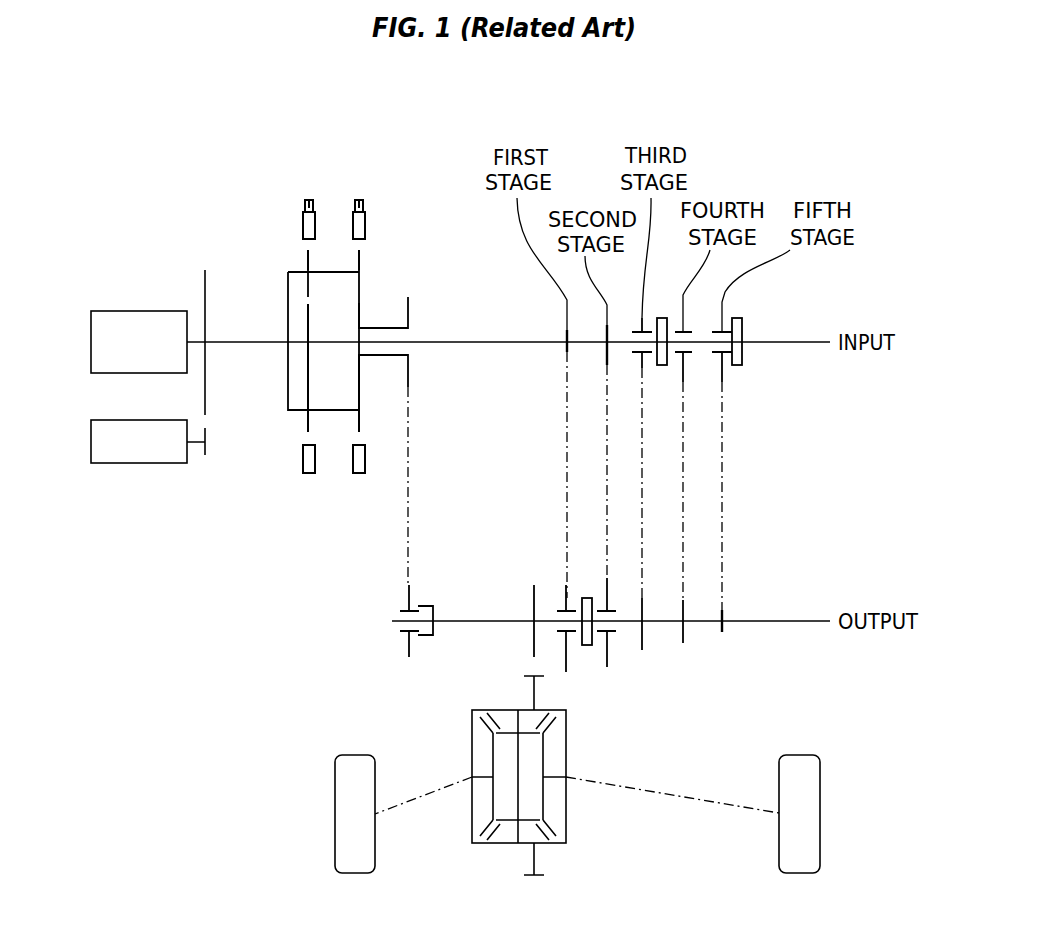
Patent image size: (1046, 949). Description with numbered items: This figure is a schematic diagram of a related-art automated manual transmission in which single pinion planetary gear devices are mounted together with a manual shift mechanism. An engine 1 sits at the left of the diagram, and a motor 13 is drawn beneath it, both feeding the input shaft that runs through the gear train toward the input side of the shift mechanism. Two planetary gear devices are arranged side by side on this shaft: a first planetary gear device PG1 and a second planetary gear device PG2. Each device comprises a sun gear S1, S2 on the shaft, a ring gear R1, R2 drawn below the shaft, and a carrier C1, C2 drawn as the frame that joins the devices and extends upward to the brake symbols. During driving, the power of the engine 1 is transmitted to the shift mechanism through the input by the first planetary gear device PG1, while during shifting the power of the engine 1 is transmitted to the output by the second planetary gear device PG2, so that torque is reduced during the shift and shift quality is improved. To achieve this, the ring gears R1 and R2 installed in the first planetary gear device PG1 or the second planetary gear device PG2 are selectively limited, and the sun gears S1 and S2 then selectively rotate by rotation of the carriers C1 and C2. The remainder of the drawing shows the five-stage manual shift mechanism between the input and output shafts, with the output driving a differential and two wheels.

The engine 1 is at (135, 311).
The motor 13 is at (140, 464).
The carrier C1 is at (300, 270).
The carrier C2 is at (330, 272).
The sun gear S1 is at (304, 355).
The sun gear S2 is at (362, 314).
The ring gear R1 is at (303, 462).
The ring gear R2 is at (366, 458).
The first planetary gear device PG1 is at (308, 480).
The second planetary gear device PG2 is at (359, 480).